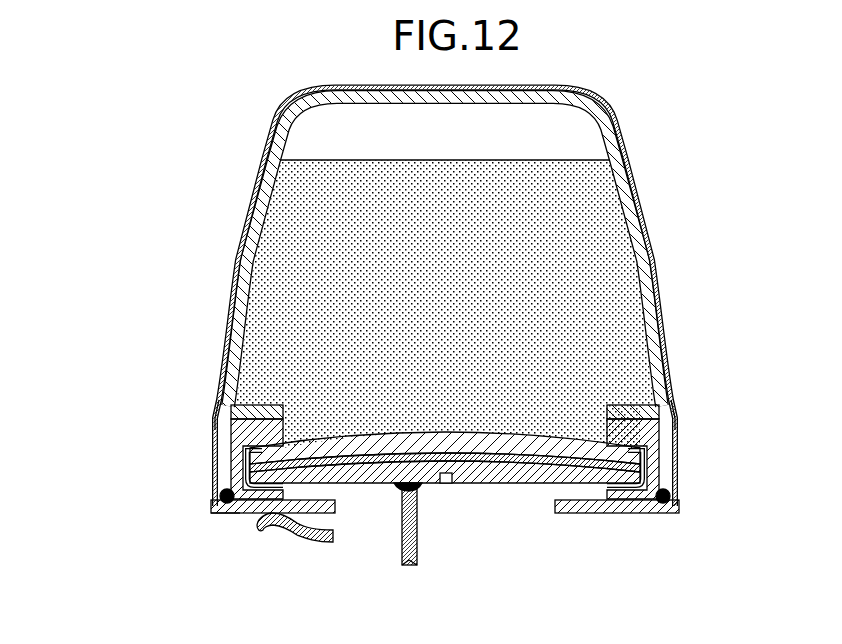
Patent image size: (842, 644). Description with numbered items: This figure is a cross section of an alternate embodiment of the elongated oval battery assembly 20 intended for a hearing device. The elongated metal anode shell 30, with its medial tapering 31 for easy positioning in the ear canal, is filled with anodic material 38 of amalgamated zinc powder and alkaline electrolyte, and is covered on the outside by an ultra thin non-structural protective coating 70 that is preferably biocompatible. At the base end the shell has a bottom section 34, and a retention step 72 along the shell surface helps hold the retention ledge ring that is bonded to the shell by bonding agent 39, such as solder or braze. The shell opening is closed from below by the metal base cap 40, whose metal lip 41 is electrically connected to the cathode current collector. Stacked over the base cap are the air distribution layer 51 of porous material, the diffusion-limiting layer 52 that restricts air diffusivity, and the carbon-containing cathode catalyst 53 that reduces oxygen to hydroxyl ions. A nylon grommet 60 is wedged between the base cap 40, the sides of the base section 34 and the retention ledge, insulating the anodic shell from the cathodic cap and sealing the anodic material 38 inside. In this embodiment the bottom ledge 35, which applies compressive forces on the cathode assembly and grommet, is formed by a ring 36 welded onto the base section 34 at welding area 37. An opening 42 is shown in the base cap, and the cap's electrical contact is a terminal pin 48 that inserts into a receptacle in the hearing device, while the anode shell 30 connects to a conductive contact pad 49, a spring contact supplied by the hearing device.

The battery assembly 20 is at (150, 212).
The metal shell 30 is at (238, 318).
The medial tapering 31 is at (616, 113).
The bottom section 34 is at (210, 500).
The bottom ledge 35 is at (625, 403).
The ring 36 is at (228, 513).
The welding area 37 is at (221, 500).
The anodic material 38 is at (628, 262).
The bonding agent 39 is at (670, 388).
The metal base cap 40 is at (518, 485).
The metal lip 41 is at (245, 462).
The slot 42 is at (447, 485).
The terminal pin 48 is at (406, 548).
The conductive contact pad 49 is at (292, 540).
The air distribution layer 51 is at (500, 455).
The diffusion-limiting layer 52 is at (380, 440).
The cathode catalyst 53 is at (445, 435).
The grommet 60 is at (650, 455).
The protective coating 70 is at (254, 190).
The retention step 72 is at (230, 410).